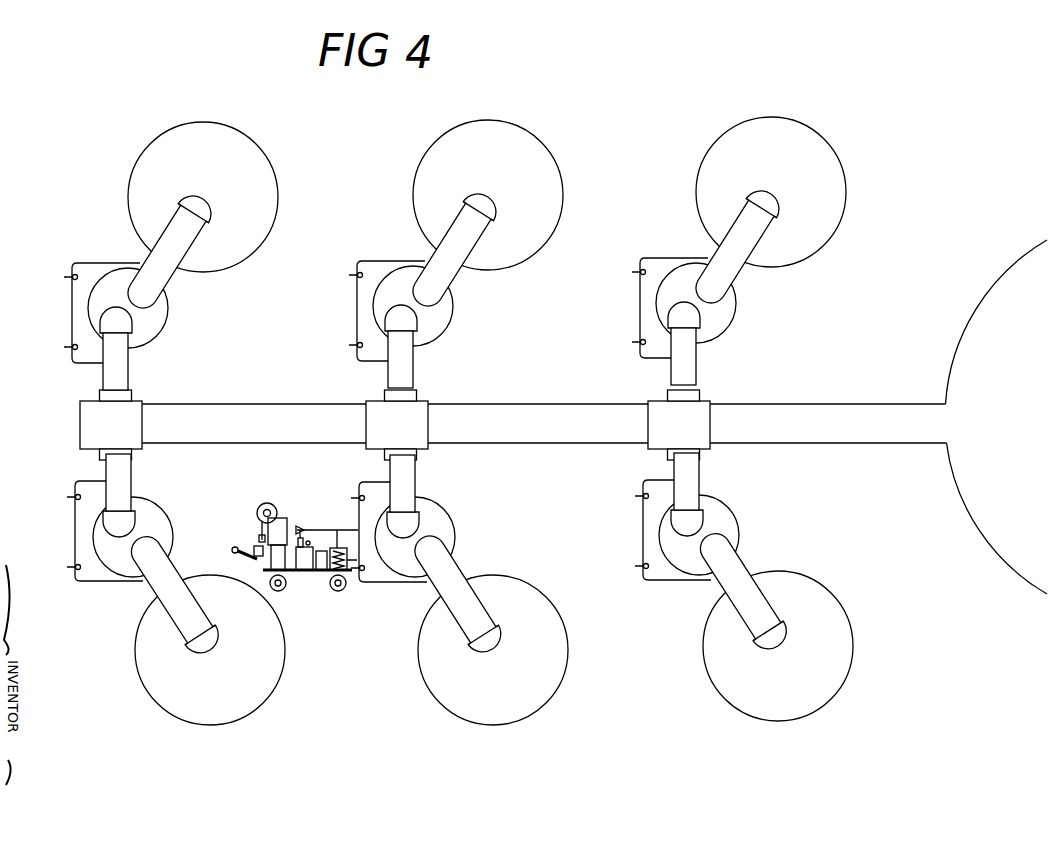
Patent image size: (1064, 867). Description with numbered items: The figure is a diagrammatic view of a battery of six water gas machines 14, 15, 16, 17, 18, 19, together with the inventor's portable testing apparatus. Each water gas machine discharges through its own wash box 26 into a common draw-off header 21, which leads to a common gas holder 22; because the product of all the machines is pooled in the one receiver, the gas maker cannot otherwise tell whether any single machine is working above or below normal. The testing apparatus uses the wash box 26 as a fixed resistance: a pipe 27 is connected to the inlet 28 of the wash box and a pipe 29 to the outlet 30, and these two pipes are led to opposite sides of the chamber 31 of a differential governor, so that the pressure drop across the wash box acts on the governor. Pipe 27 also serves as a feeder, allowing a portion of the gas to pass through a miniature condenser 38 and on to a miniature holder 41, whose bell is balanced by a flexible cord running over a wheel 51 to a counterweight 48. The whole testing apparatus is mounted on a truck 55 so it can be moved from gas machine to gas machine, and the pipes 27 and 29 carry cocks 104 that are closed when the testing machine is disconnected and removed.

The water gas machine 14 is at (279, 208).
The water gas machine 15 is at (562, 212).
The water gas machine 16 is at (844, 208).
The water gas machine 17 is at (274, 695).
The water gas machine 18 is at (561, 697).
The water gas machine 19 is at (849, 693).
The draw-off header 21 is at (578, 403).
The gas holder 22 is at (976, 303).
The wash box 26 is at (166, 330).
The pipe 27 is at (110, 257).
The inlet 28 is at (168, 283).
The pipe 29 is at (94, 366).
The outlet 30 is at (128, 377).
The chamber 31 is at (297, 528).
The miniature condenser 38 is at (348, 566).
The miniature holder 41 is at (294, 572).
The counterweight 48 is at (250, 544).
The wheel 51 is at (267, 504).
The truck 55 is at (311, 572).
The cocks 104 is at (64, 347).